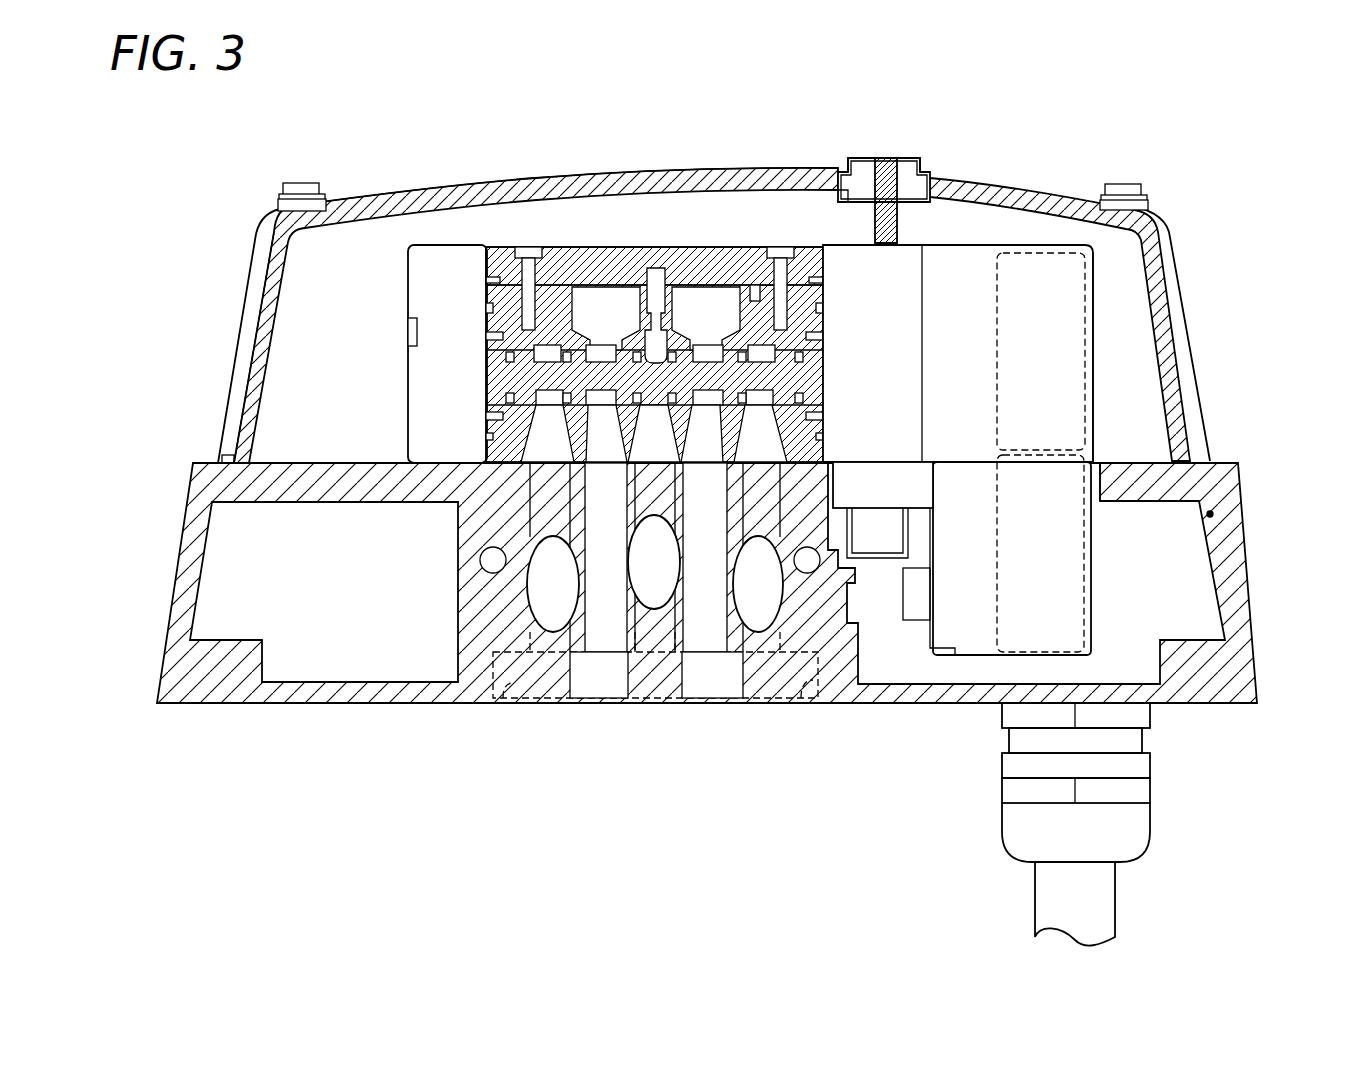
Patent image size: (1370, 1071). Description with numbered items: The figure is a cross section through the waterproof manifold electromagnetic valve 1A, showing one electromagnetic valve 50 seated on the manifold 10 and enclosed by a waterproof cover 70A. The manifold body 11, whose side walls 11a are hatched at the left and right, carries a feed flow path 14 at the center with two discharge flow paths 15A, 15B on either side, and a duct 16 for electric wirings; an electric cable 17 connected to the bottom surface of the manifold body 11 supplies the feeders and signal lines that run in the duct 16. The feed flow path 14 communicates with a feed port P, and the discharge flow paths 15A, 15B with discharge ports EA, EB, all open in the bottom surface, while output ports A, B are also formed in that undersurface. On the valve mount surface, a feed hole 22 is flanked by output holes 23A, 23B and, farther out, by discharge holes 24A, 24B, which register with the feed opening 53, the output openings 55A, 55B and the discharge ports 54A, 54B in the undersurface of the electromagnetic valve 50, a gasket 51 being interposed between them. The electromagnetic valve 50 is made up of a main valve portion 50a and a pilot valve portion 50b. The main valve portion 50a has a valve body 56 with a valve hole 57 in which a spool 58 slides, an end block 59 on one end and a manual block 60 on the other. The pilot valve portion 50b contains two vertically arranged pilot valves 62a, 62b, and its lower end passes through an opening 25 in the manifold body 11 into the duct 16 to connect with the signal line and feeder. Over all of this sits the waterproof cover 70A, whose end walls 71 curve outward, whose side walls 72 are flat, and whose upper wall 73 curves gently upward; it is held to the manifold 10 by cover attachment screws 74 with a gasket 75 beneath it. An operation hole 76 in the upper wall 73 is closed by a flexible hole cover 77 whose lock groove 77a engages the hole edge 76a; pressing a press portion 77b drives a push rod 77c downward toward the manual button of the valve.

The manifold electromagnetic valve 1A is at (1110, 145).
The manifold 10 is at (345, 710).
The manifold body 11 is at (930, 694).
The side wall of base body 11a is at (193, 572).
The feed flow path 14 is at (667, 578).
The discharge flow path 15A is at (778, 598).
The discharge flow path 15B is at (572, 598).
The duct 16 is at (1156, 578).
The electric cable 17 is at (1095, 891).
The feed hole 22 is at (655, 557).
The output hole 23A is at (703, 480).
The output hole 23B is at (565, 543).
The discharge hole 24A is at (792, 478).
The discharge hole 24B is at (552, 473).
The opening 25 is at (1212, 513).
The electromagnetic valve 50 is at (659, 243).
The main valve portion 50a is at (573, 243).
The pilot valve portion 50b is at (1043, 243).
The gasket 51 is at (822, 442).
The feed opening 53 is at (650, 328).
The discharge port 54A is at (770, 310).
The discharge port 54B is at (545, 447).
The output opening 55A is at (697, 372).
The output opening 55B is at (605, 440).
The valve body 56 is at (755, 298).
The valve hole 57 is at (487, 362).
The spool 58 is at (513, 274).
The end block 59 is at (430, 272).
The manual block 60 is at (905, 328).
The pilot valve 62a is at (1050, 408).
The pilot valve 62b is at (1055, 590).
The waterproof cover 70A is at (358, 196).
The end wall 71 is at (258, 370).
The side wall 72 is at (300, 287).
The upper wall 73 is at (460, 183).
The cover attachment screw 74 is at (300, 183).
The gasket 75 is at (232, 458).
The operation hole 76 is at (929, 172).
The hole edge 76a is at (838, 186).
The hole cover 77 is at (880, 158).
The lock groove 77a is at (843, 170).
The press portion 77b is at (906, 158).
The push rod 77c is at (893, 236).
The output port A is at (728, 698).
The output port B is at (579, 704).
The feed port P is at (617, 704).
The discharge port EA is at (809, 700).
The discharge port EB is at (507, 700).